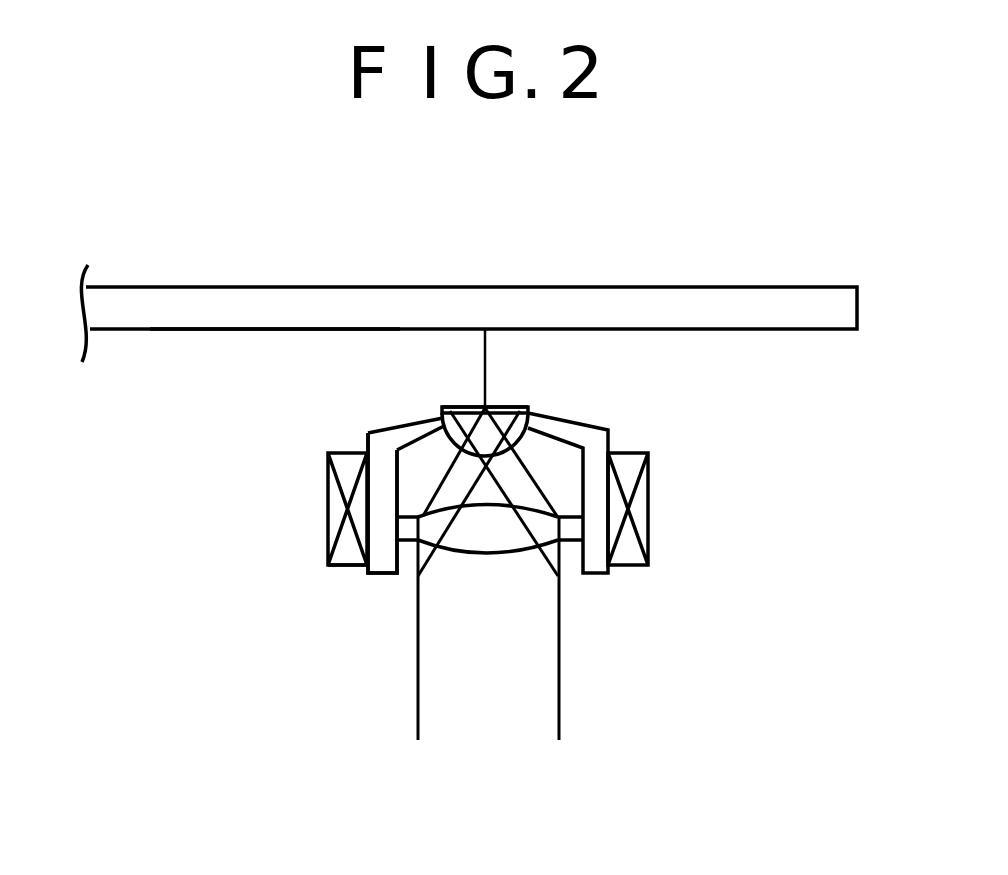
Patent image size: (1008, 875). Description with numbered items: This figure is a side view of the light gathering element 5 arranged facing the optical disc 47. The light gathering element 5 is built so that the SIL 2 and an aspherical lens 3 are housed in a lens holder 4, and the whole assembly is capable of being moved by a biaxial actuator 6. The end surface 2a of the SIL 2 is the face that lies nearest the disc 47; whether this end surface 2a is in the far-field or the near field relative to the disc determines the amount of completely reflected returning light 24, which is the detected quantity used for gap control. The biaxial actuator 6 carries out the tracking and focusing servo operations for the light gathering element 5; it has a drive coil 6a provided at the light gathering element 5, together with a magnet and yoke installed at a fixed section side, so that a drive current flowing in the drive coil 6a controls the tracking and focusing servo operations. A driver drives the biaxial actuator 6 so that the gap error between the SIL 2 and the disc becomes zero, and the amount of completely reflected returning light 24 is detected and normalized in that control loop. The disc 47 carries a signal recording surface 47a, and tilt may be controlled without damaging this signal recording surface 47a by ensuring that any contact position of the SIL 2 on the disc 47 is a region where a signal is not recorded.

The SIL 2 is at (460, 418).
The end surface of SIL 2a is at (517, 407).
The aspherical lens 3 is at (505, 535).
The lens holder 4 is at (403, 435).
The light gathering element 5 is at (558, 412).
The biaxial actuator 6 is at (318, 553).
The drive coil 6a is at (347, 566).
The completely reflected returning light 24 is at (530, 708).
The optical disc 47 is at (538, 297).
The signal recording surface 47a is at (233, 331).